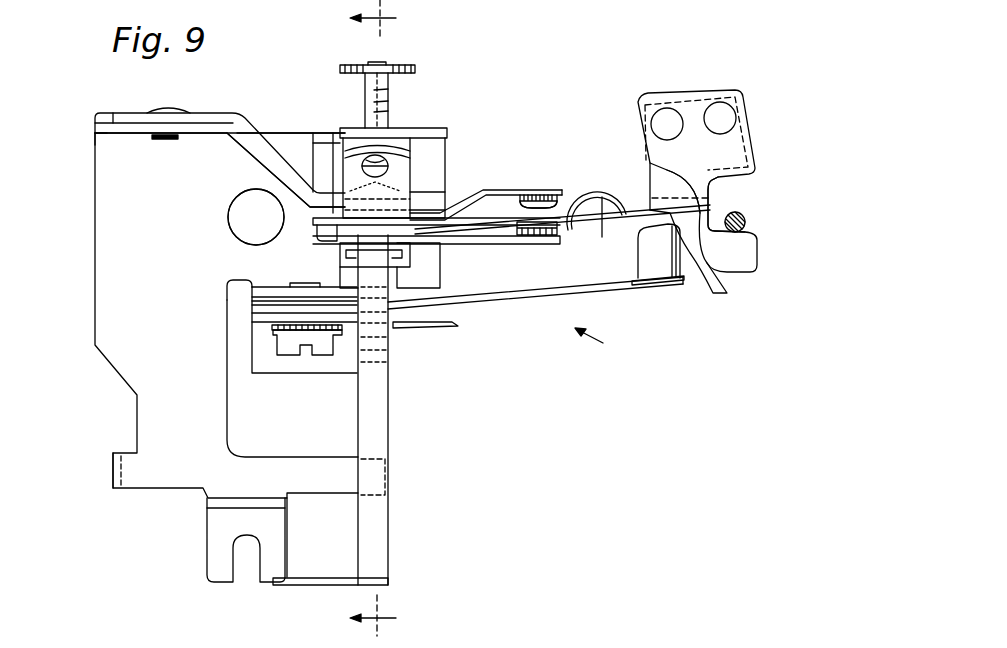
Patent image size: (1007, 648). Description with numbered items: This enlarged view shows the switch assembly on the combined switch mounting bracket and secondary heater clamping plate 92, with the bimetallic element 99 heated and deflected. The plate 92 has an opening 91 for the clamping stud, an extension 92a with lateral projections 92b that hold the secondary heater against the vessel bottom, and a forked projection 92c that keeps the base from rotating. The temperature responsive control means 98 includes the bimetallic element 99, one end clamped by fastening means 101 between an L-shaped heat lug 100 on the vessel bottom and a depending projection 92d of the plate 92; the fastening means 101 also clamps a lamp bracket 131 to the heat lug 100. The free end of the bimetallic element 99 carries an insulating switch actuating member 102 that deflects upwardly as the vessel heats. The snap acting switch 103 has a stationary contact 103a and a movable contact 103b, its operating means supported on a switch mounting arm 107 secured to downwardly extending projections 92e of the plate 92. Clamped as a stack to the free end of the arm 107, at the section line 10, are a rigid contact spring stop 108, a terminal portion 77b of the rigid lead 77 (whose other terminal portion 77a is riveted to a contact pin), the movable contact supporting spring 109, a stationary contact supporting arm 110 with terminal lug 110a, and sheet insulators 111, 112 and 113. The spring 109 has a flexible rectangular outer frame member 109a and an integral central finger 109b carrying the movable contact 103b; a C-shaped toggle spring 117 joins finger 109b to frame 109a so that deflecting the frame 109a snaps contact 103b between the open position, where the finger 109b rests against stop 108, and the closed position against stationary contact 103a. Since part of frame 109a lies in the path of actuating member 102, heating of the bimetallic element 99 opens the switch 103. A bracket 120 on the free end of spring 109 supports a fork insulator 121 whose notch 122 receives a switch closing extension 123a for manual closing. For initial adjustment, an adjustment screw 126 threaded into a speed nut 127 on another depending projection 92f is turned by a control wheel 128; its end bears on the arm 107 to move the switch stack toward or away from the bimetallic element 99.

The section line 10- 10 is at (390, 318).
The rigid lead or conductor 77 is at (388, 540).
The terminal portion of conductor 77a is at (316, 586).
The terminal portion of terminal lead 77b is at (320, 243).
The opening 91 is at (229, 216).
The combined switch mounting bracket and secondary heater clamping plate 92 is at (108, 244).
The extension 92a is at (222, 425).
The lateral projections 92b is at (131, 453).
The forked projection 92c is at (215, 543).
The depending projection 92d is at (270, 287).
The downwardly extending projections 92e is at (115, 135).
The depending projection 92f is at (326, 131).
The temperature responsive control means 98 is at (602, 344).
The bimetallic element 99 is at (520, 309).
The heat lug 100 is at (240, 321).
The fastening means 101 is at (288, 353).
The insulating switch actuating member 102 is at (655, 279).
The snap acting switch 103 is at (571, 191).
The stationary contact 103a is at (535, 192).
The movable contact 103b is at (530, 237).
The switch mounting arm 107 is at (205, 113).
The contact spring stop 108 is at (452, 250).
The movable contact supporting spring 109 is at (315, 227).
The flexible rectangular outer frame member 109a is at (716, 294).
The integral central finger 109b is at (497, 238).
The stationary contact supporting arm 110 is at (479, 197).
The terminal lug 110a is at (400, 160).
The sheet insulator 111 is at (315, 201).
The sheet insulator 112 is at (256, 217).
The sheet insulator 113 is at (398, 251).
The C-shaped toggle spring 117 is at (602, 208).
The bracket 120 is at (666, 181).
The fork insulator 121 is at (730, 150).
The notch or recess 122 is at (721, 181).
The switch closing extension 123a is at (746, 220).
The adjustment screw 126 is at (386, 89).
The speed nut 127 is at (410, 130).
The control wheel 128 is at (408, 66).
The lamp bracket 131 is at (432, 329).